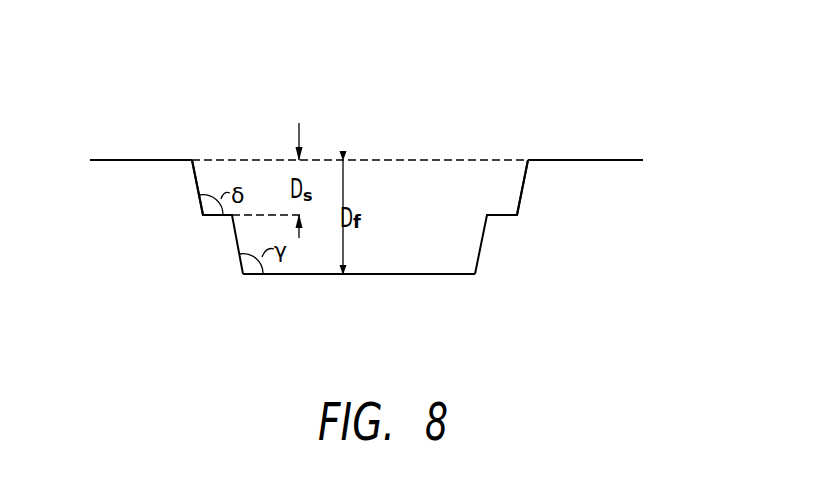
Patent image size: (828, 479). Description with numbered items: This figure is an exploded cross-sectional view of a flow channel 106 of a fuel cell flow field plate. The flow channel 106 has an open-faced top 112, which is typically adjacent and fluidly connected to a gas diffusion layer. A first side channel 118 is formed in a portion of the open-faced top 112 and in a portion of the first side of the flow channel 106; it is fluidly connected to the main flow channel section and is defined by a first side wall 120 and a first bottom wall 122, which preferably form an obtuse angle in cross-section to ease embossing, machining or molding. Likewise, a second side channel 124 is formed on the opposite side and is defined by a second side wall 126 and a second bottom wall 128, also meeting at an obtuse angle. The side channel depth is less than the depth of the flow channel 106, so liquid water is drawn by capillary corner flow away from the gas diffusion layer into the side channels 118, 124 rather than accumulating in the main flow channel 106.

The flow channel 106 is at (465, 67).
The open-faced top 112 is at (331, 160).
The first side channel 118 is at (211, 178).
The first side wall 120 is at (196, 183).
The first bottom wall 122 is at (218, 216).
The second side channel 124 is at (502, 195).
The second side wall 126 is at (527, 181).
The second bottom wall 128 is at (500, 217).